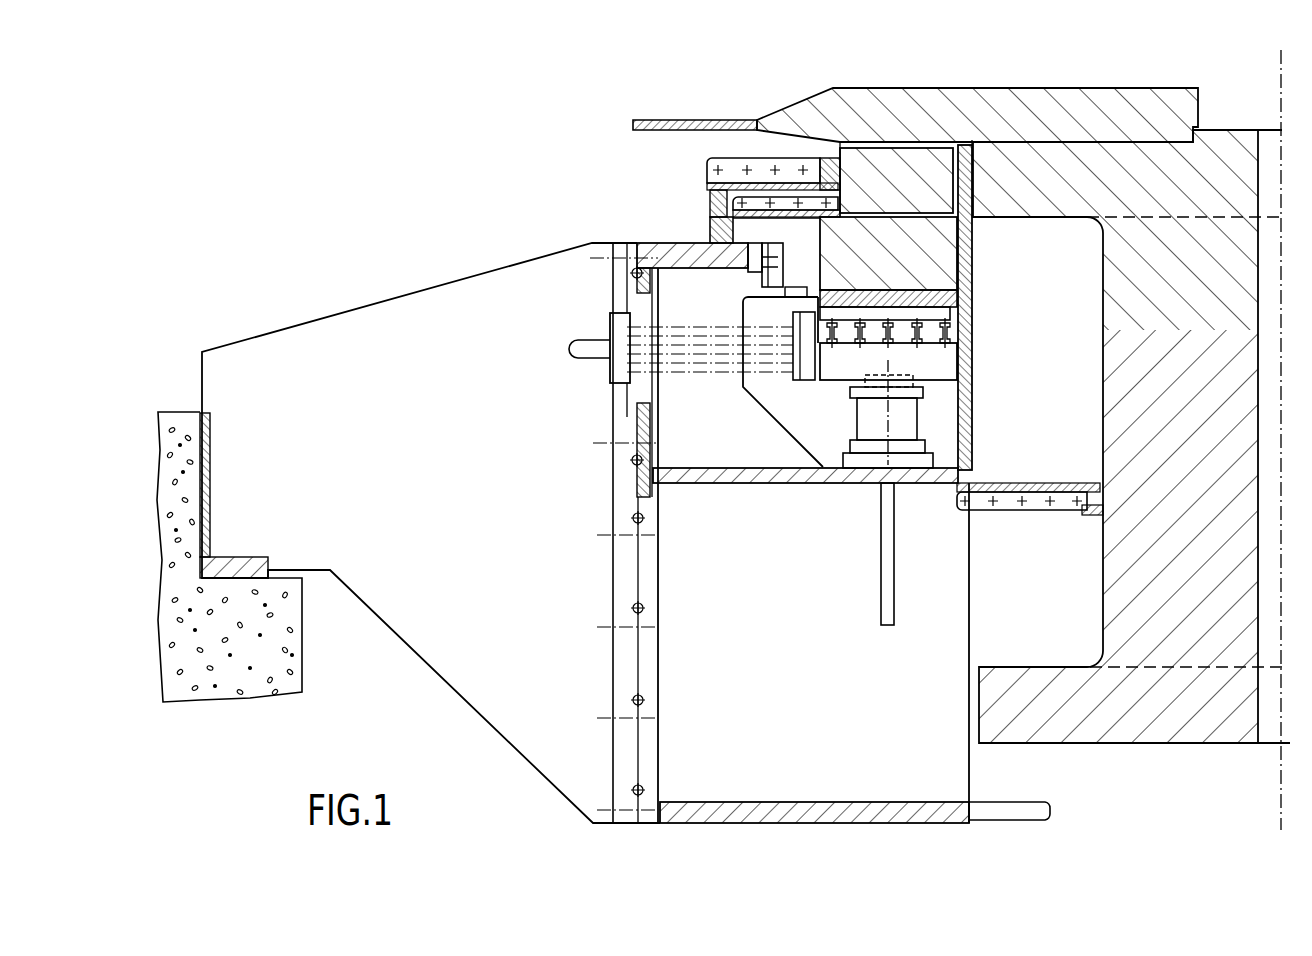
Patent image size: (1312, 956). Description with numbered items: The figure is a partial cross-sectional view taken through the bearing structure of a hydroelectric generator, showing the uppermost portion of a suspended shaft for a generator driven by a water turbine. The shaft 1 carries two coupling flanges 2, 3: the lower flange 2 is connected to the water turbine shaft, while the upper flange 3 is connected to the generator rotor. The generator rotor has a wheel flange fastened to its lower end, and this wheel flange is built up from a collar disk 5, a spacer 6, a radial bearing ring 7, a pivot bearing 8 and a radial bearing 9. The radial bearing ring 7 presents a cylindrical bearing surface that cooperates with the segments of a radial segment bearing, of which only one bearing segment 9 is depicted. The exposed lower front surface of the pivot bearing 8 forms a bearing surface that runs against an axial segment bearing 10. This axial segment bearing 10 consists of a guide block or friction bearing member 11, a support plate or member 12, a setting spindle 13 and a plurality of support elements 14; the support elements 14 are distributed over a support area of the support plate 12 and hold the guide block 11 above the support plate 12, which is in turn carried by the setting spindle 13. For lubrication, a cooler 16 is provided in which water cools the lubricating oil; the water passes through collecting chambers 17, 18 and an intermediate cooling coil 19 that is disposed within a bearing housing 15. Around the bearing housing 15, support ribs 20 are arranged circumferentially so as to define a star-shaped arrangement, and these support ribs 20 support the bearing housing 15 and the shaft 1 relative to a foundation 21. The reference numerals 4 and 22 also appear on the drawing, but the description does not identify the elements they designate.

The shaft 1 is at (1103, 435).
The lower coupling flange 2 is at (1103, 715).
The upper coupling flange 3 is at (1042, 192).
The cover plate top surface 4 is at (1132, 88).
The collar disk 5 is at (896, 132).
The spacer 6 is at (902, 191).
The radial bearing ring 7 is at (872, 269).
The pivot bearing 8 is at (920, 300).
The radial bearing segment 9 is at (812, 258).
The axial segment bearing 10 is at (841, 384).
The guide block 11 is at (947, 313).
The support plate 12 is at (947, 374).
The setting spindle 13 is at (914, 434).
The support elements 14 is at (952, 333).
The bearing housing 15 is at (724, 458).
The cooler 16 is at (603, 323).
The collecting chamber 17 is at (617, 373).
The collecting chamber 18 is at (810, 370).
The cooling coil 19 is at (690, 352).
The support ribs 20 is at (472, 531).
The foundation 21 is at (258, 684).
The coupling piece 22 is at (895, 385).